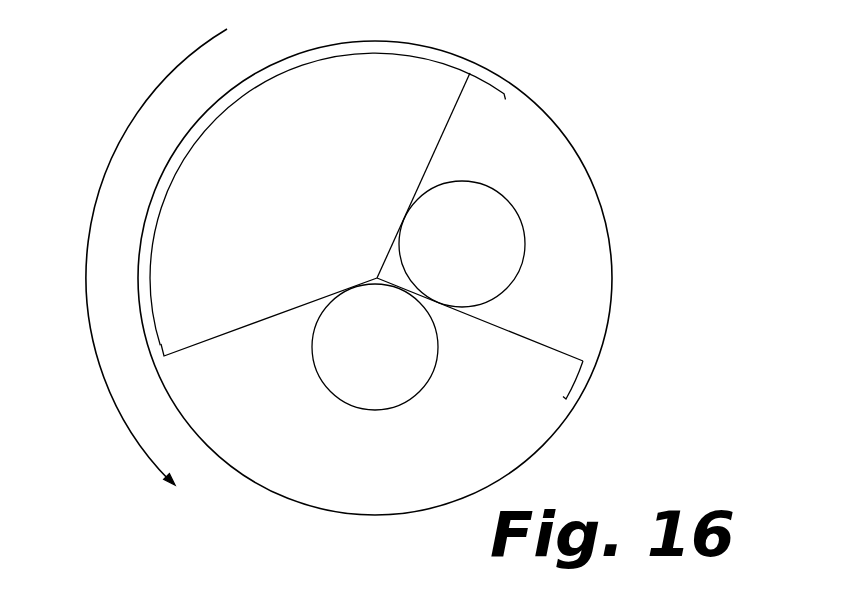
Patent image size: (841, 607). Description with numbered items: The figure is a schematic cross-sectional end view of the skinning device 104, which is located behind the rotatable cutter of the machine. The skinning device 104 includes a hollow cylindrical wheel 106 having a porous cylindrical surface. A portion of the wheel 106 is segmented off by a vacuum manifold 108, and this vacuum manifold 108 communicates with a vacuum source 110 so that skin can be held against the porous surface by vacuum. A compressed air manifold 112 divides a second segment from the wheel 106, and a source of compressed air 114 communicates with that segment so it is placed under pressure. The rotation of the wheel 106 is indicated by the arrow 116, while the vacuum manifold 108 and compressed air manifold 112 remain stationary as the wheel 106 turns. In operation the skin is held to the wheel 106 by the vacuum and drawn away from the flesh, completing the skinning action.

The skinning device 104 is at (612, 154).
The hollow cylindrical wheel 106 is at (611, 229).
The vacuum manifold 108 is at (252, 432).
The vacuum source 110 is at (398, 403).
The compressed air manifold 112 is at (437, 148).
The source of compressed air 114 is at (538, 137).
The arrow 116 is at (110, 390).